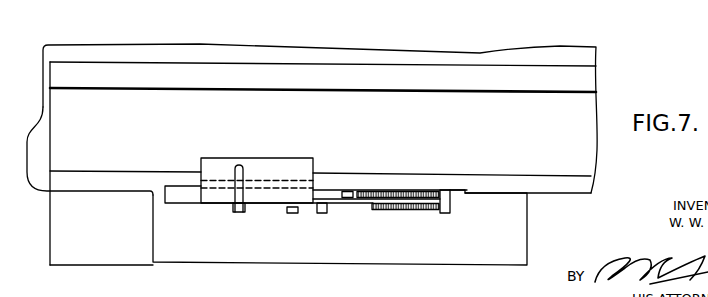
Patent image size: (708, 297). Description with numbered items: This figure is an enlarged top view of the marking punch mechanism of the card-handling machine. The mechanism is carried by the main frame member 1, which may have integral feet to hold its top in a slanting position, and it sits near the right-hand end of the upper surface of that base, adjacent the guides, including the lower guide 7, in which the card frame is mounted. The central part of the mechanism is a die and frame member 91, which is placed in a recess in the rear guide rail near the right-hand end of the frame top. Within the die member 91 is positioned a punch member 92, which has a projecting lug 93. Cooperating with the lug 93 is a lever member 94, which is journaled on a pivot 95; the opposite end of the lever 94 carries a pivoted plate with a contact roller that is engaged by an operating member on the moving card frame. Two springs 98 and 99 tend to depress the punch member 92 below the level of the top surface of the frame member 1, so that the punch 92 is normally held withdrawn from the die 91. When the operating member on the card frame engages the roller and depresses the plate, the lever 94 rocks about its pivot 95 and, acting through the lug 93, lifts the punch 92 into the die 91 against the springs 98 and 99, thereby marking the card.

The main frame member 1 is at (593, 108).
The lower guide 7 is at (575, 185).
The die and frame member 91 is at (286, 163).
The punch member 92 is at (240, 168).
The projecting lug 93 is at (237, 212).
The lever member 94 is at (308, 208).
The pivot 95 is at (288, 213).
The spring 98 is at (392, 191).
The spring 99 is at (397, 210).